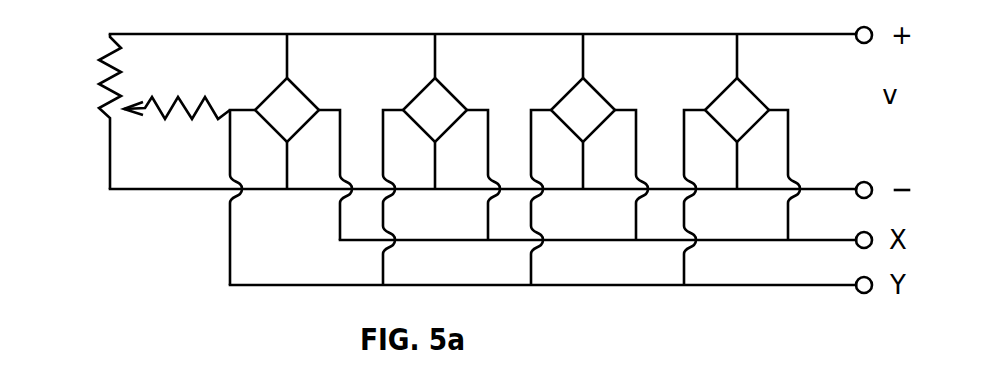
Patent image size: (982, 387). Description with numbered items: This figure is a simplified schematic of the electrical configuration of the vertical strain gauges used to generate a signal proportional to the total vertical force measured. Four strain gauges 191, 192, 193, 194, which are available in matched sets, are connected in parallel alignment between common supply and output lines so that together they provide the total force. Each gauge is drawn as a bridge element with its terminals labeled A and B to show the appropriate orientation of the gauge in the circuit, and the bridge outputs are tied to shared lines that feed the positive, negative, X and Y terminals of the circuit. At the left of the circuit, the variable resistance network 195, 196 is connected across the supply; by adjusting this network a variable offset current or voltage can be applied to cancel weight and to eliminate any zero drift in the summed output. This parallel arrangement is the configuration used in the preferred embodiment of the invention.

The strain gauge 191 is at (303, 93).
The strain gauge 192 is at (443, 92).
The strain gauge 193 is at (597, 96).
The strain gauge 194 is at (753, 97).
The variable resistance network 195 is at (100, 90).
The variable resistance network 196 is at (188, 98).